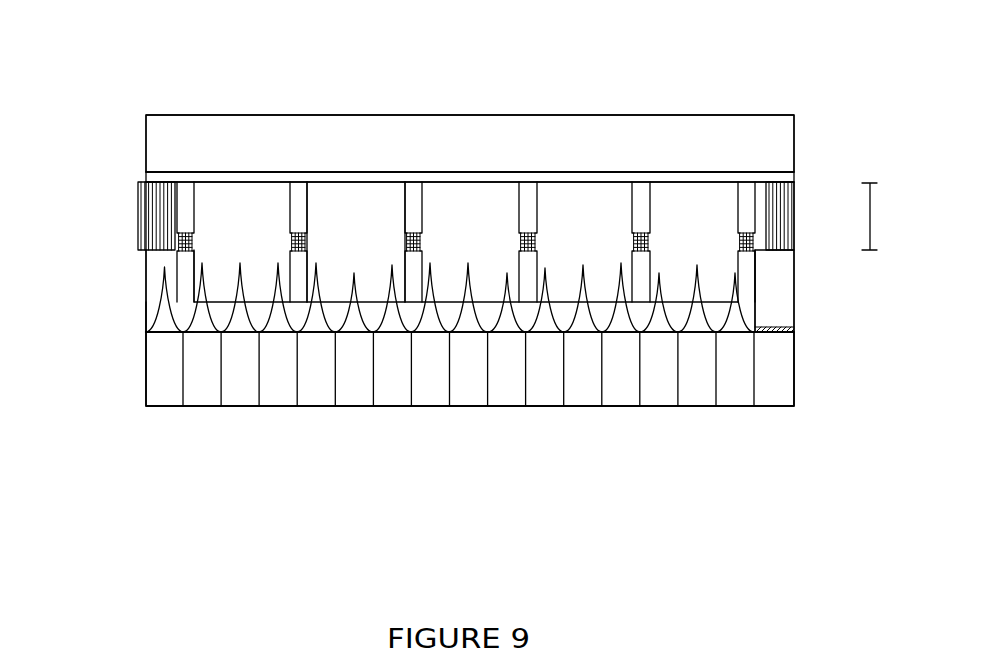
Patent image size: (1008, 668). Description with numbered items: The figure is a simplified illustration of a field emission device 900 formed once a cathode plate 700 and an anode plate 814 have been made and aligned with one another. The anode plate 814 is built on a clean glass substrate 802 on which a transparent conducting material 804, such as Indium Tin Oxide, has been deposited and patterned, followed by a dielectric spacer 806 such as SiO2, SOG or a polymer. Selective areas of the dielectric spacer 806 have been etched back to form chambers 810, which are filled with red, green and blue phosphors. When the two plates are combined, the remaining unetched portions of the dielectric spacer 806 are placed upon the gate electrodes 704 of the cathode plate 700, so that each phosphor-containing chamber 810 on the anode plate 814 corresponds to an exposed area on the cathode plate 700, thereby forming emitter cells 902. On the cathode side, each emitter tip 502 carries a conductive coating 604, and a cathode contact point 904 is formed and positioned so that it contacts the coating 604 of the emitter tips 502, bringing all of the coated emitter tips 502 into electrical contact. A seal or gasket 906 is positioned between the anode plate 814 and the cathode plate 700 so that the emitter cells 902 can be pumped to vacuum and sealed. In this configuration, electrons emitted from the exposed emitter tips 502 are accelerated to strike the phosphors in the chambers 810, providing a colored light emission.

The field emission device 900 is at (840, 84).
The glass substrate 802 is at (793, 123).
The transparent conducting material 804 is at (258, 177).
The dielectric spacer 806 is at (185, 197).
The chambers 810 is at (318, 197).
The emitter tip 502 is at (403, 268).
The gate electrodes 704 is at (649, 243).
The anode plate 814 is at (90, 118).
The seal or gasket 906 is at (138, 197).
The cathode plate 700 is at (90, 252).
The conductive coating 604 is at (147, 315).
The emitter cells 902 is at (213, 290).
The cathode contact point 904 is at (795, 330).